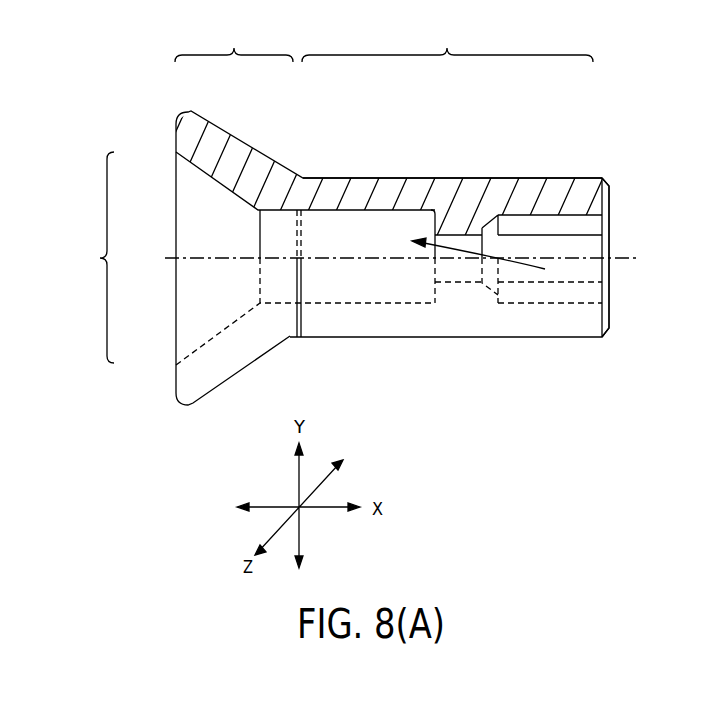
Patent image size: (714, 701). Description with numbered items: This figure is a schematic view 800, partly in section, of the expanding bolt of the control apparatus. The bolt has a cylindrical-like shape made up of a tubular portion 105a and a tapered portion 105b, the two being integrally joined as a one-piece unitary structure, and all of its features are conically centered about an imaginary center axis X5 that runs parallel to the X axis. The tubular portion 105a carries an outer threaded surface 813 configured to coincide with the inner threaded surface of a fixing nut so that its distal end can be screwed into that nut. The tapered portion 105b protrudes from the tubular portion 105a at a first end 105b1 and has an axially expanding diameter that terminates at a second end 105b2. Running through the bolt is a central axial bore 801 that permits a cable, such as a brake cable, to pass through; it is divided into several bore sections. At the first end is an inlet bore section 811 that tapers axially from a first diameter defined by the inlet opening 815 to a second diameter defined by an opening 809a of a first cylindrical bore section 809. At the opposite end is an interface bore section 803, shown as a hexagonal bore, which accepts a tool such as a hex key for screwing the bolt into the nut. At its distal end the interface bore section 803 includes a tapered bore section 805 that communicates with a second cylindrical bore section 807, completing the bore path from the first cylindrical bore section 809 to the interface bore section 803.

The schematic view 800 is at (86, 99).
The tubular portion 105a is at (409, 128).
The tapered portion 105b is at (234, 190).
The first end 105b1 is at (297, 334).
The second end 105b2 is at (188, 392).
The central axial bore 801 is at (494, 260).
The interface bore section 803 is at (592, 226).
The tapered bore section 805 is at (534, 178).
The second cylindrical bore section 807 is at (467, 280).
The first cylindrical bore section 809 is at (372, 278).
The opening 809a is at (260, 223).
The inlet bore section 811 is at (213, 190).
The outer threaded surface 813 is at (555, 178).
The inlet opening 815 is at (88, 257).
The center axis X5 is at (388, 260).